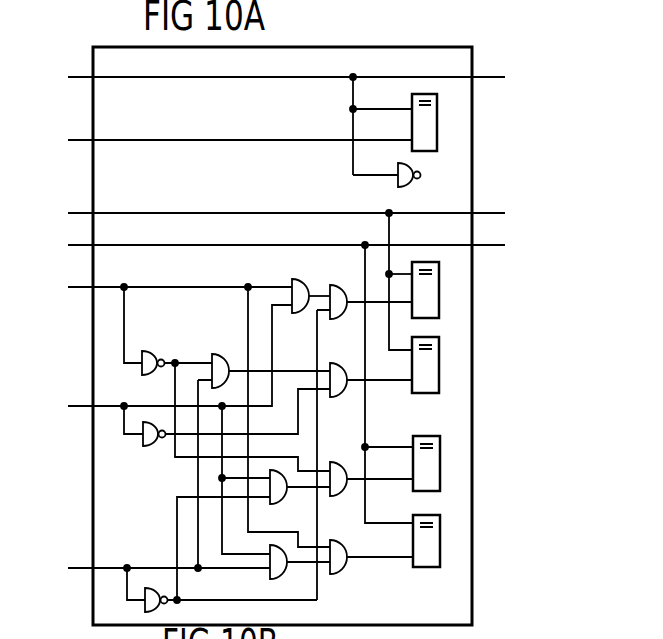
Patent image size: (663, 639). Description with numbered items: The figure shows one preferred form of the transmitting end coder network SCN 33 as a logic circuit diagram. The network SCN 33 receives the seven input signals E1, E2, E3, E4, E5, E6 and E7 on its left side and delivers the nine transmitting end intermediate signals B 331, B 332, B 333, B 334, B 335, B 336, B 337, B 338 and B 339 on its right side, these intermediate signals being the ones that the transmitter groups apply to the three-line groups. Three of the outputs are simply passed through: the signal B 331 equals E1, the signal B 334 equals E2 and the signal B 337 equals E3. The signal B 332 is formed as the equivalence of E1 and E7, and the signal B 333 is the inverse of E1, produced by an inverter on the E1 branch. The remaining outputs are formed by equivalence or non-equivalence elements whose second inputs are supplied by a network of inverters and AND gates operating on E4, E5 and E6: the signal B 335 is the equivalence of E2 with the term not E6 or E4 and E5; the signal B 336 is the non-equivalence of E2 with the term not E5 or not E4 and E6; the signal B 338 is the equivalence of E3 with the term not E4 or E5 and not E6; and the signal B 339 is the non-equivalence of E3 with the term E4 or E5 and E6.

The coder network SCN33 33 is at (447, 47).
The intermediate signal B331 331 is at (455, 77).
The intermediate signal B332 332 is at (437, 120).
The intermediate signal B333 333 is at (421, 175).
The intermediate signal B334 334 is at (473, 214).
The intermediate signal B335 335 is at (439, 289).
The intermediate signal B336 336 is at (447, 363).
The intermediate signal B337 337 is at (461, 246).
The intermediate signal B338 338 is at (440, 463).
The intermediate signal B339 339 is at (448, 538).
The input signal E1 is at (270, 78).
The input signal E2 is at (270, 214).
The input signal E3 is at (270, 246).
The input signal E4 is at (164, 288).
The input signal E5 is at (164, 363).
The input signal E6 is at (153, 569).
The input signal E7 is at (224, 141).